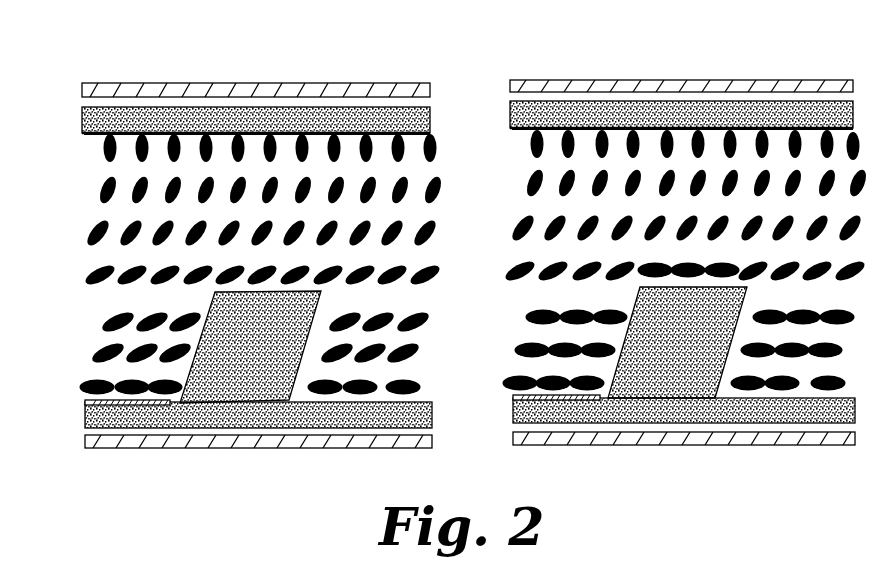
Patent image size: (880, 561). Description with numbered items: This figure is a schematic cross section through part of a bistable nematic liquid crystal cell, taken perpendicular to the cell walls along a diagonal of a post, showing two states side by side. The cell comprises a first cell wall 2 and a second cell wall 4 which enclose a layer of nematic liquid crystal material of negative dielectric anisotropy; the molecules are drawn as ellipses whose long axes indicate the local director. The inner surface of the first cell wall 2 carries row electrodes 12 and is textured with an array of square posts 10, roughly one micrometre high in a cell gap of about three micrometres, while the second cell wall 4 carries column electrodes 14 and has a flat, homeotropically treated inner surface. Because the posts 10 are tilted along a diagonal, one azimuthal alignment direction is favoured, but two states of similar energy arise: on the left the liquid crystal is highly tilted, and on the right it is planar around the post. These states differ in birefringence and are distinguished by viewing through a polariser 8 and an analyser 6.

The first cell wall 2 is at (85, 415).
The second cell wall 4 is at (82, 118).
The analyser 6 is at (246, 440).
The polariser 8 is at (259, 90).
The square post 10 is at (215, 295).
The row electrodes 12 is at (170, 400).
The column electrodes 14 is at (95, 135).